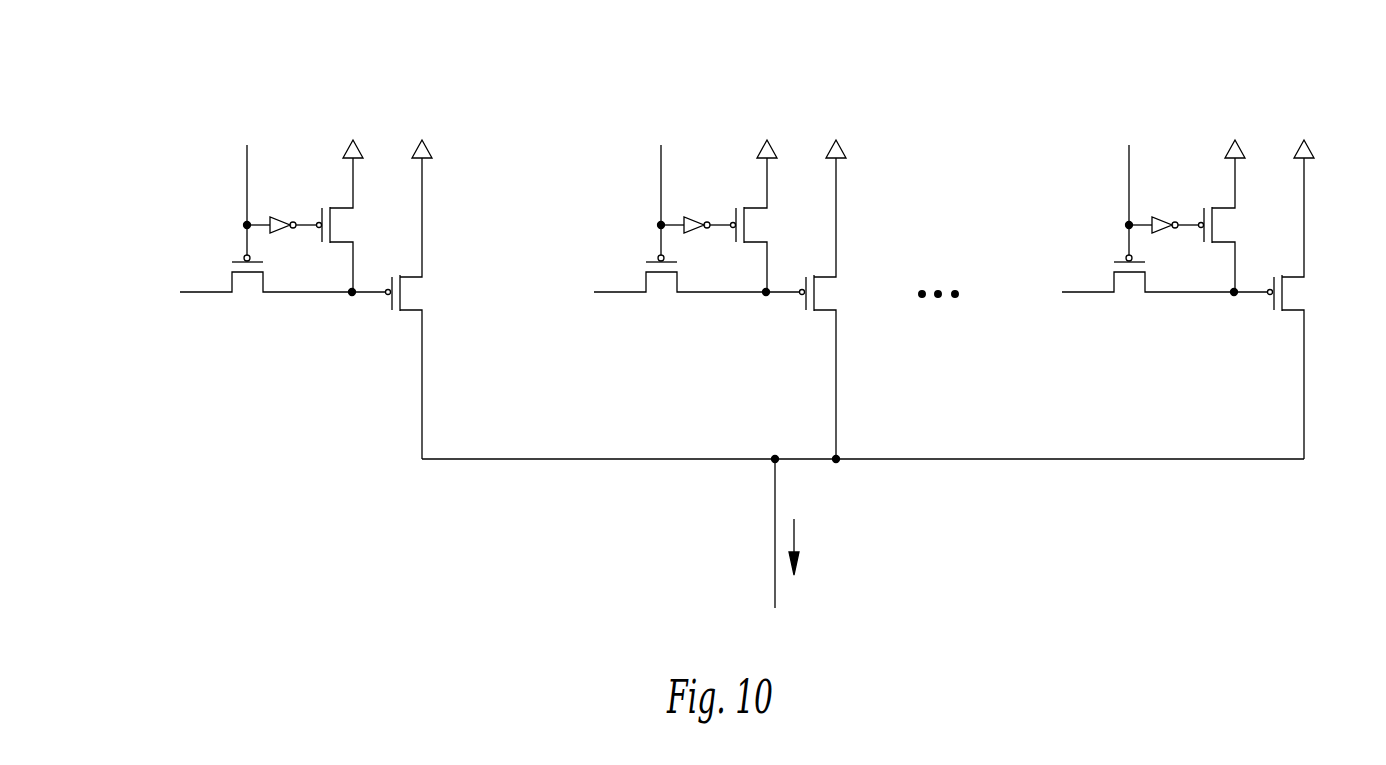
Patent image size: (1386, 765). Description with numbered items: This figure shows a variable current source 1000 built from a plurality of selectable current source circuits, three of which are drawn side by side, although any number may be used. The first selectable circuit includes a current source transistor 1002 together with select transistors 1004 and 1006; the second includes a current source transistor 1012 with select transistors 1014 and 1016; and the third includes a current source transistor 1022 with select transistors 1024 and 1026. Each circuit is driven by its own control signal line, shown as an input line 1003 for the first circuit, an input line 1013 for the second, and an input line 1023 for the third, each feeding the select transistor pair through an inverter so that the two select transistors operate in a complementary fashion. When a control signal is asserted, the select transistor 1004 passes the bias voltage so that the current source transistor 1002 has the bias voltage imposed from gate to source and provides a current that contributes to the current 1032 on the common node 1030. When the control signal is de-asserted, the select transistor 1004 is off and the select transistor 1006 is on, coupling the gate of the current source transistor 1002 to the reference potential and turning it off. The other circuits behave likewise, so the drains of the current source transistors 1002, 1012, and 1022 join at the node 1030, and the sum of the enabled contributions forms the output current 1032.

The current source 1000 is at (135, 150).
The current source transistor 1002 is at (415, 309).
The input signal line A[0] 1003 is at (247, 188).
The select transistor 1004 is at (263, 280).
The select transistor 1006 is at (344, 240).
The current source transistor 1012 is at (834, 299).
The input signal line A[1] 1013 is at (635, 172).
The select transistor 1014 is at (651, 306).
The select transistor 1016 is at (747, 218).
The current source transistor 1022 is at (1302, 299).
The input signal line A[N] 1023 is at (1103, 172).
The select transistor 1024 is at (1119, 306).
The select transistor 1026 is at (1215, 218).
The node 1030 is at (775, 537).
The current 1032 is at (796, 566).